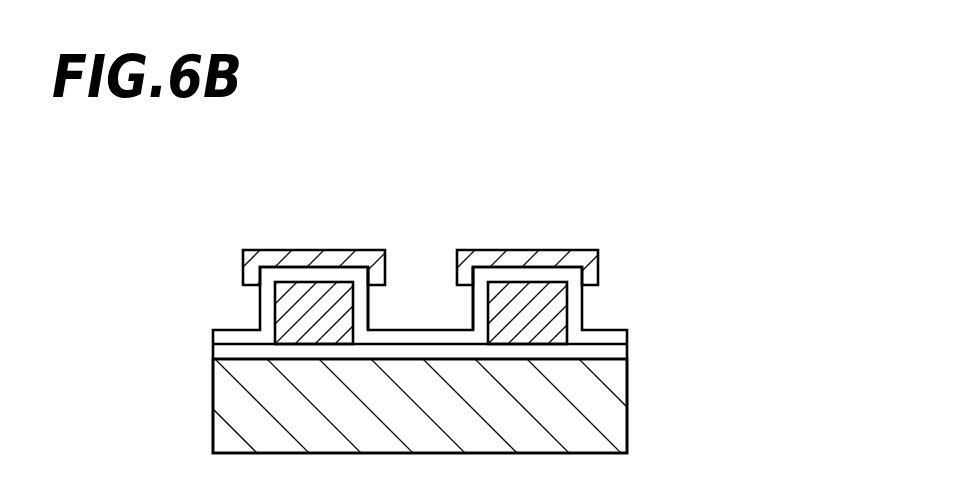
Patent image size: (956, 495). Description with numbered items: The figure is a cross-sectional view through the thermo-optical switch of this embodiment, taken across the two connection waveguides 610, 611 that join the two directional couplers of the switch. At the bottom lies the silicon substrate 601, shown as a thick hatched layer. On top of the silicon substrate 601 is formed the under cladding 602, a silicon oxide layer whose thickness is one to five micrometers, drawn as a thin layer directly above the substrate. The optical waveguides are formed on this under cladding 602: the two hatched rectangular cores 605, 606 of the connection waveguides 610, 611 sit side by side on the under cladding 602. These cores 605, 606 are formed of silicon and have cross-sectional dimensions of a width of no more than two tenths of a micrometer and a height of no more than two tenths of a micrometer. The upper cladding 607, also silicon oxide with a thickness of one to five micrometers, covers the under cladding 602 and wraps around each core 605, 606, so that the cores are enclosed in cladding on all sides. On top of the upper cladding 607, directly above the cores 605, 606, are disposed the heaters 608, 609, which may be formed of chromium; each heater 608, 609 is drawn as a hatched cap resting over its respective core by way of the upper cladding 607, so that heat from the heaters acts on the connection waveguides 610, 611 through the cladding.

The silicon substrate 601 is at (627, 400).
The under cladding 602 is at (627, 350).
The core 605 is at (287, 310).
The core 606 is at (557, 305).
The upper cladding 607 is at (627, 331).
The heater 608 is at (293, 260).
The heater 609 is at (527, 260).
The connection waveguide 610 is at (395, 310).
The connection waveguide 611 is at (445, 310).